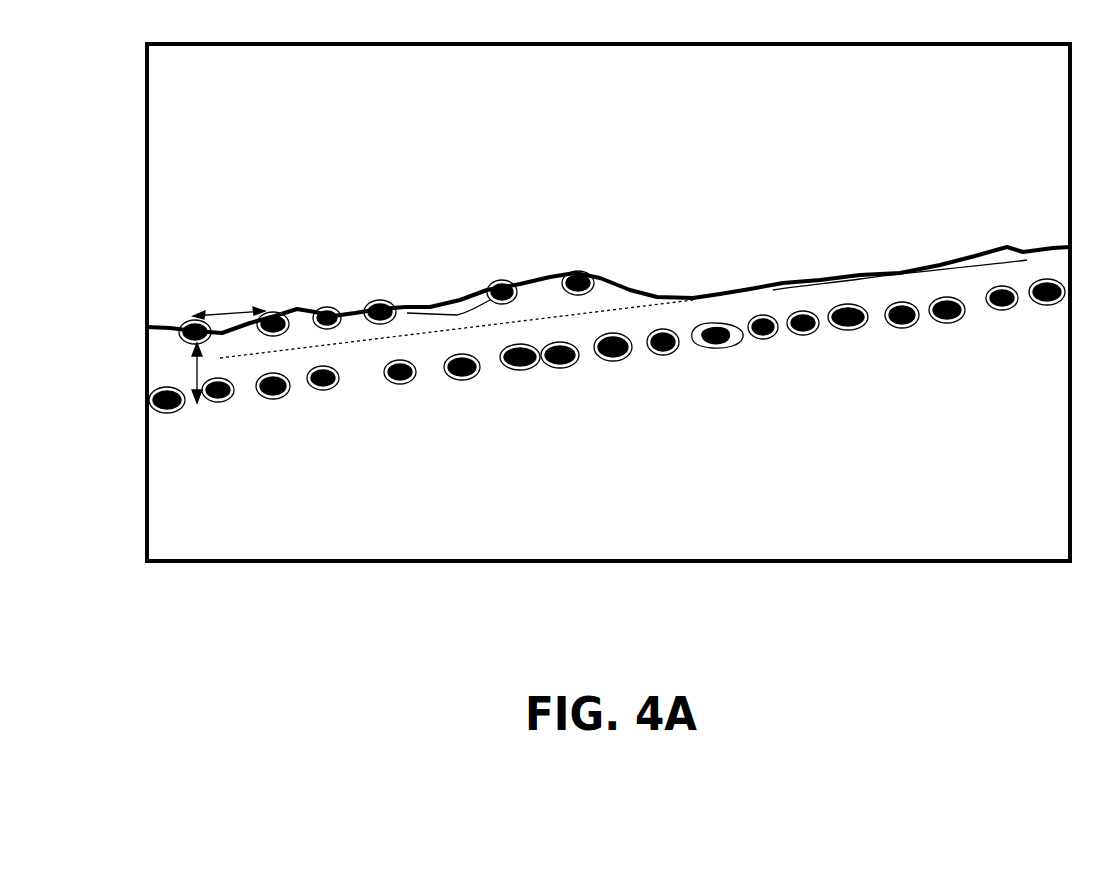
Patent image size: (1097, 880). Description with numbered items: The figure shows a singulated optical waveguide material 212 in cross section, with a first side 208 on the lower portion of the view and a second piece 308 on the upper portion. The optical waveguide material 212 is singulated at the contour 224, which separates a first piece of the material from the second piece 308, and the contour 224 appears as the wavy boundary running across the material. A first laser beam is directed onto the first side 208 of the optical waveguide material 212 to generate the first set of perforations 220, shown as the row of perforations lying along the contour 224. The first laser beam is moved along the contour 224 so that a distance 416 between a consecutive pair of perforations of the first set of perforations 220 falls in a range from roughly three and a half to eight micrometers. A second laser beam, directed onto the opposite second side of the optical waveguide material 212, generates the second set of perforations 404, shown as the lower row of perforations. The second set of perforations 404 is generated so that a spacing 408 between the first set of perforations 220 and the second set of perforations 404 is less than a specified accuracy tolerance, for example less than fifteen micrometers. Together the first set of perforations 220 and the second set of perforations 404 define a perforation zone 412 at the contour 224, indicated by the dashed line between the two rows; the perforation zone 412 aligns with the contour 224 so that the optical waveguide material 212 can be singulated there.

The optical waveguide material 212 is at (132, 573).
The second piece 308 is at (626, 159).
The first side 208 is at (670, 469).
The first set of perforations 220 is at (497, 282).
The contour 224 is at (830, 275).
The perforation zone 412 is at (622, 312).
The distance 416 is at (227, 313).
The spacing 408 is at (197, 370).
The second set of perforations 404 is at (337, 384).